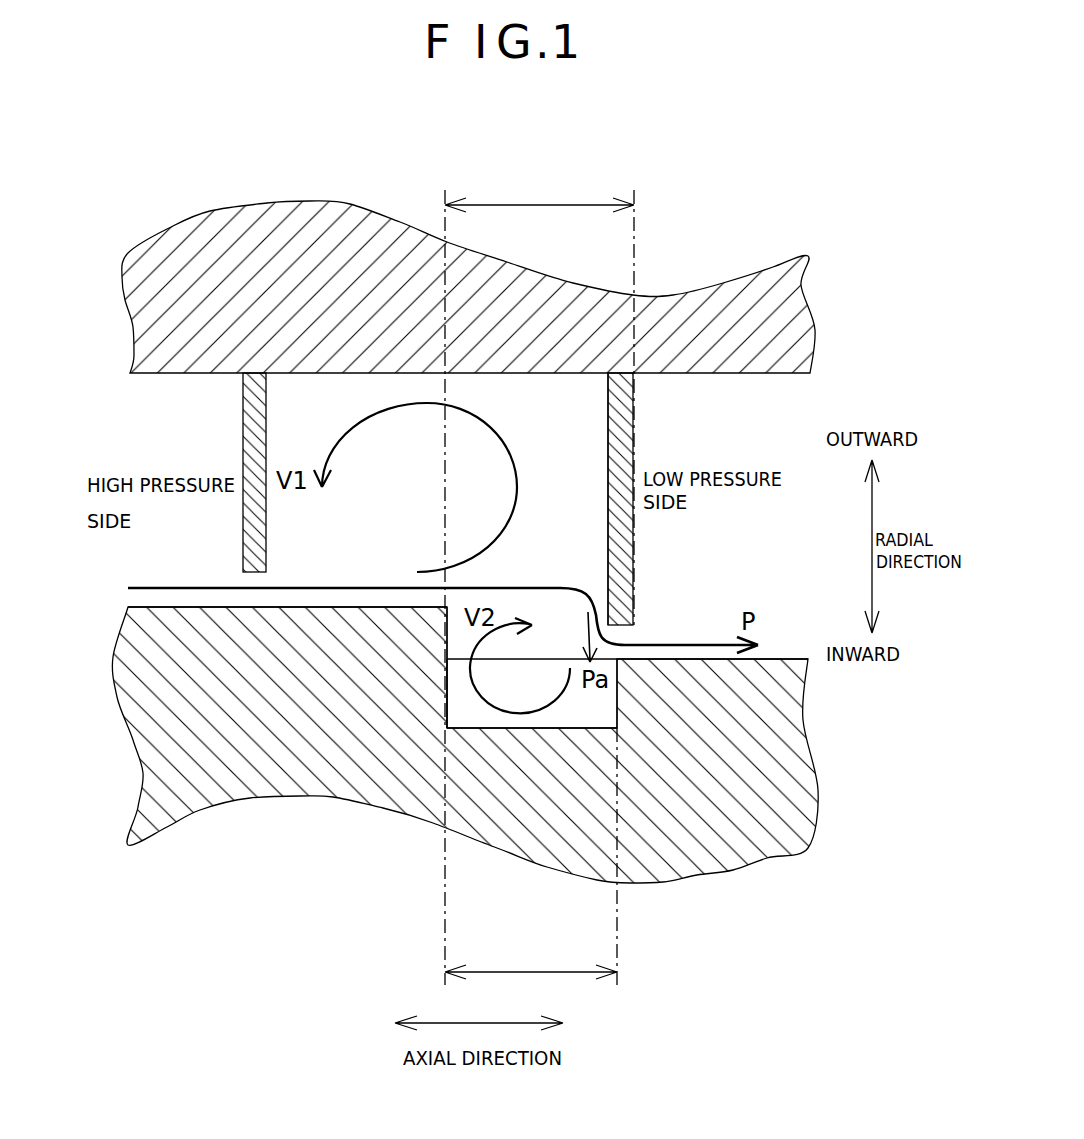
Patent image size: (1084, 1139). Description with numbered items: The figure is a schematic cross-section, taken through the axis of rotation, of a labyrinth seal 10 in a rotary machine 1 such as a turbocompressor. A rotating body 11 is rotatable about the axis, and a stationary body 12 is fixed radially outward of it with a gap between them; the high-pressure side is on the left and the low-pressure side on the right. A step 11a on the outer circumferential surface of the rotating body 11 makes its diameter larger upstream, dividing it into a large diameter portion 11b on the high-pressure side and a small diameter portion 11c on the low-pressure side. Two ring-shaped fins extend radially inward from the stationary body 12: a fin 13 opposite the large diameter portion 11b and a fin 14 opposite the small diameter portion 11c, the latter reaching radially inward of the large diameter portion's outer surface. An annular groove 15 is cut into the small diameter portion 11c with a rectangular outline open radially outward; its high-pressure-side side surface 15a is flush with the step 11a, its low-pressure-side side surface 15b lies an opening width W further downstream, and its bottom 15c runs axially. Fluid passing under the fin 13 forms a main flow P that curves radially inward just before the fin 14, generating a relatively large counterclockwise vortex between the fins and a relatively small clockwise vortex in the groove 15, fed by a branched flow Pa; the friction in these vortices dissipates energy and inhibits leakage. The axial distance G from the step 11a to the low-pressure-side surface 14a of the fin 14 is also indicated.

The rotary machine 1 is at (95, 221).
The labyrinth seal 10 is at (769, 431).
The rotating body 11 is at (800, 776).
The step 11a is at (447, 632).
The large diameter portion 11b is at (353, 613).
The small diameter portion 11c is at (694, 668).
The stationary body 12 is at (800, 322).
The fin 13 is at (245, 447).
The fin 14 is at (634, 447).
The low-pressure-side surface 14a is at (634, 543).
The annular groove 15 is at (561, 644).
The high-pressure-side side surface 15a is at (447, 705).
The low-pressure-side side surface 15b is at (617, 705).
The bottom 15c is at (556, 728).